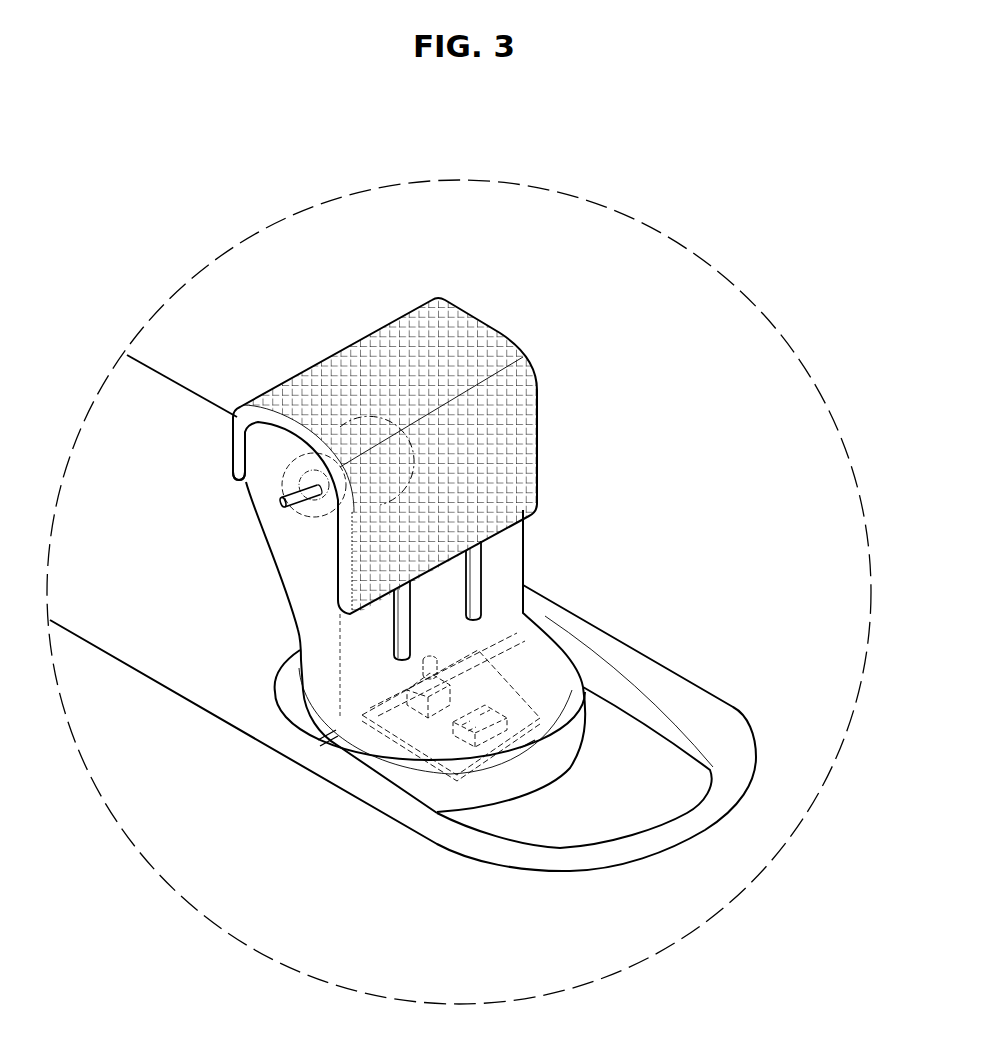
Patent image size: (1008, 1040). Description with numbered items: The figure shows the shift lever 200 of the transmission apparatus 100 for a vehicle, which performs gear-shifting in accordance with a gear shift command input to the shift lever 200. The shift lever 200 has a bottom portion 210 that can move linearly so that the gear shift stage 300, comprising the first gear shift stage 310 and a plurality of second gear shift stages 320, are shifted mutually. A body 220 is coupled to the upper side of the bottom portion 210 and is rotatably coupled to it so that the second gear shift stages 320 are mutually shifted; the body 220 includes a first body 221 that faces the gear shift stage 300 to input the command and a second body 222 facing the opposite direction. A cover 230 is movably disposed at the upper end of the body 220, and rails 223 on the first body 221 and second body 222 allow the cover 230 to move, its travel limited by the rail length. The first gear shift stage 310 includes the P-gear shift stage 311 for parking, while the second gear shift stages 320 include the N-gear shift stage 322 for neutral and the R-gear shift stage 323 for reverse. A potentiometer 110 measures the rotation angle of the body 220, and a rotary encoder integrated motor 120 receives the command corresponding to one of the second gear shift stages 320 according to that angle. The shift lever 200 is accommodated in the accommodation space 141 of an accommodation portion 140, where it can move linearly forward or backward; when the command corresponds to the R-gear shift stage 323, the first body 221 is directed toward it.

The transmission apparatus for a vehicle 100 is at (553, 271).
The potentiometer 110 is at (500, 652).
The rotary encoder integrated motor 120 is at (340, 427).
The accommodation portion 140 is at (728, 720).
The accommodation space 141 is at (640, 775).
The shift lever 200 is at (148, 660).
The bottom portion 210 is at (288, 663).
The body 220 is at (213, 567).
The first body 221 is at (357, 630).
The second body 222 is at (275, 565).
The rail 223 is at (482, 552).
The cover 230 is at (233, 443).
The gear shift stage 300 is at (567, 927).
The first gear shift stage 310 is at (420, 641).
The P-gear shift stage 311 is at (672, 830).
The second gear shift stage 320 is at (430, 886).
The N-gear shift stage 322 is at (338, 750).
The R-gear shift stage 323 is at (518, 746).